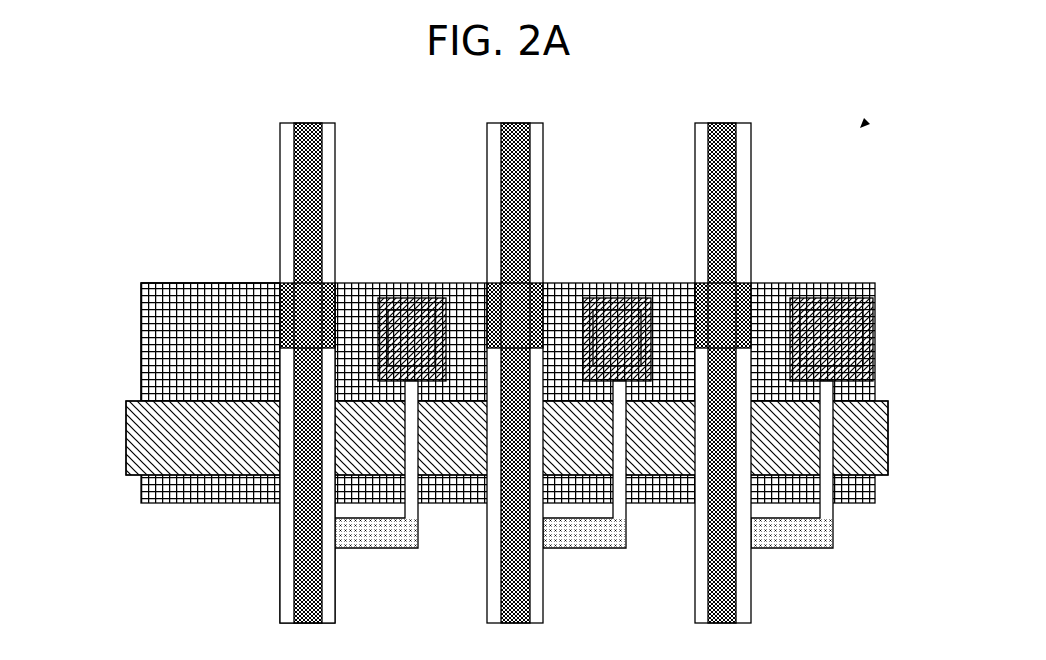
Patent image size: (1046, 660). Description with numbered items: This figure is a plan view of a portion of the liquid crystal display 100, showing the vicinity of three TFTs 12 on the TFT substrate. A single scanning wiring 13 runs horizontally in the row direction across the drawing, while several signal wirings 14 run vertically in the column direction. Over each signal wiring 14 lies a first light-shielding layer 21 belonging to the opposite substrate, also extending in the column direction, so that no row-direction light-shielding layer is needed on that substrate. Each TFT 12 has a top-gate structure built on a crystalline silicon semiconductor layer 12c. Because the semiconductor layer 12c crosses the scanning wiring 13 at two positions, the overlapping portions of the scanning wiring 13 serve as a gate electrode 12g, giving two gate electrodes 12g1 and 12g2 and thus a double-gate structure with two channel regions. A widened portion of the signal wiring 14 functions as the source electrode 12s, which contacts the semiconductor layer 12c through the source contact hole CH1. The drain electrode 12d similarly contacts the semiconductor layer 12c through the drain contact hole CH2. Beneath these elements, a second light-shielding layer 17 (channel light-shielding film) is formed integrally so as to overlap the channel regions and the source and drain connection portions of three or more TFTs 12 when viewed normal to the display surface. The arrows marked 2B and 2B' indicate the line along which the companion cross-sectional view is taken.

The liquid crystal display 100 is at (881, 90).
The TFT 12 is at (527, 462).
The source electrode 12s is at (217, 276).
The drain electrode 12d is at (382, 288).
The gate electrode 12g is at (527, 453).
The first gate electrode 12g1 is at (275, 498).
The second gate electrode 12g2 is at (412, 498).
The crystalline silicon semiconductor layer 12c is at (352, 542).
The scanning wiring 13 is at (118, 438).
The signal wiring 14 is at (277, 203).
The second light-shielding layer 17 is at (180, 496).
The first light-shielding layer 21 is at (286, 157).
The source contact hole CH1 is at (165, 318).
The drain contact hole CH2 is at (423, 300).
The cross-section line 2B is at (286, 263).
The cross-section line 2B' is at (438, 263).